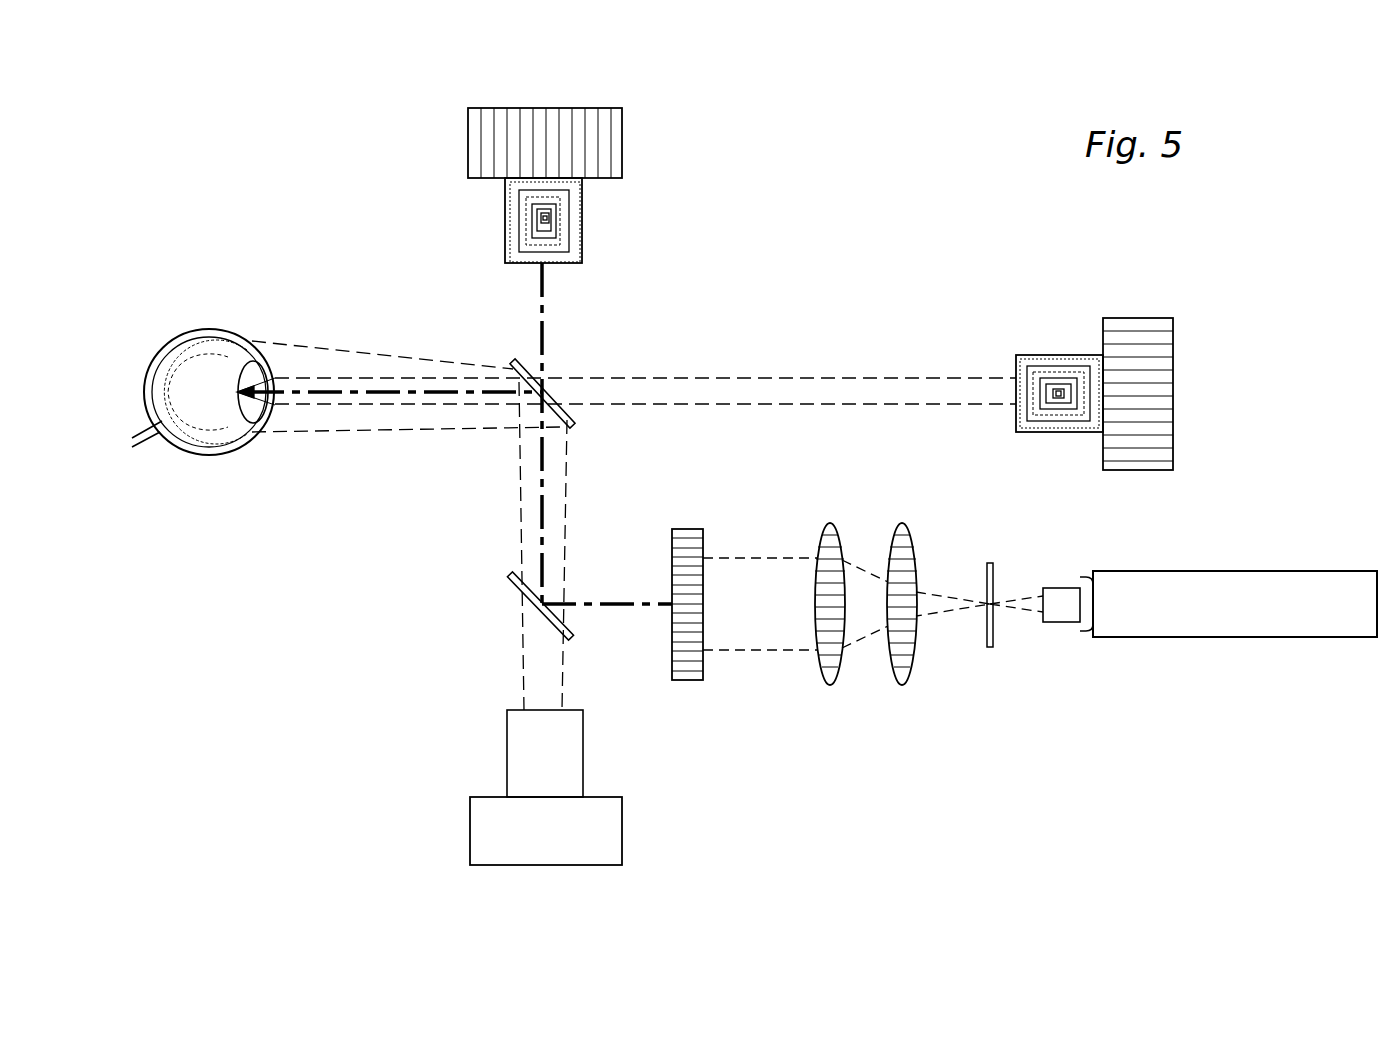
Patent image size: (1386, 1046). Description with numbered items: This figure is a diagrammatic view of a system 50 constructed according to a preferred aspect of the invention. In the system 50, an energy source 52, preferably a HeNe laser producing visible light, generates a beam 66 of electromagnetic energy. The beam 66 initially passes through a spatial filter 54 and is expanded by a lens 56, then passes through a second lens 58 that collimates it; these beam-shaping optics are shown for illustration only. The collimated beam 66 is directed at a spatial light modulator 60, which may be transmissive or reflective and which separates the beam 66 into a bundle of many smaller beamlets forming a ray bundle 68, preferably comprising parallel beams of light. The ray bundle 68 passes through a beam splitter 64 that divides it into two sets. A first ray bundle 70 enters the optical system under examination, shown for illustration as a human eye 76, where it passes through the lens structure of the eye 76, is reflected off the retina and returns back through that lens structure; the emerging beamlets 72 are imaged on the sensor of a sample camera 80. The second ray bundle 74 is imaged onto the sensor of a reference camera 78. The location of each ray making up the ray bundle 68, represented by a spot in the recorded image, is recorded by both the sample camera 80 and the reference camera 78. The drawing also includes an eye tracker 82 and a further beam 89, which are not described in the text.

The system 50 is at (858, 166).
The energy source 52 is at (1255, 638).
The spatial filter 54 is at (988, 647).
The lens 56 is at (903, 685).
The second lens 58 is at (832, 687).
The spatial light modulator 60 is at (688, 682).
The beam splitter 64 is at (572, 415).
The beam 66 is at (1020, 595).
The ray bundle 68 is at (633, 607).
The first ray bundle 70 is at (373, 389).
The emerging beamlets 72 is at (427, 377).
The second ray bundle 74 is at (544, 321).
The eye 76 is at (168, 340).
The reference camera 78 is at (622, 130).
The sample camera 80 is at (1175, 362).
The eye tracker 82 is at (622, 828).
The outer beam 89 is at (378, 432).